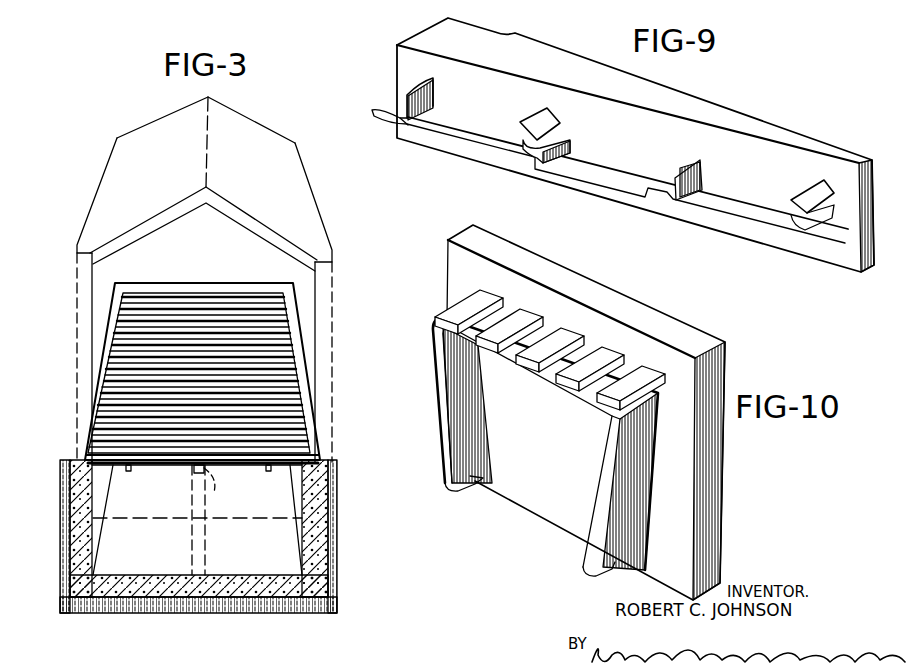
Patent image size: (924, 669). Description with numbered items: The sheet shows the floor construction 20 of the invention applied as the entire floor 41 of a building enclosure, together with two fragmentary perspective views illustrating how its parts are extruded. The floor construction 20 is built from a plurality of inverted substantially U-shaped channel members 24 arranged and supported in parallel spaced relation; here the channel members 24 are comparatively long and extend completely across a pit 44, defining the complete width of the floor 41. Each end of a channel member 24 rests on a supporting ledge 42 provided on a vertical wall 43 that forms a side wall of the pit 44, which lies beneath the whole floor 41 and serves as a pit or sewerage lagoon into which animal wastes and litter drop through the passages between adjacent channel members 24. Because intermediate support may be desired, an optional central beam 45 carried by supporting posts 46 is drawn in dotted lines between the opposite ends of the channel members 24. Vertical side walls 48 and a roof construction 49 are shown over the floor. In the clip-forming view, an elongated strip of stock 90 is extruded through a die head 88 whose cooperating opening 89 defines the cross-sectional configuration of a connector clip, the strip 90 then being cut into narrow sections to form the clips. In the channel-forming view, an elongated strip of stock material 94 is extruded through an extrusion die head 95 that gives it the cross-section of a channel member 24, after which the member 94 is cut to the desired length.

In FIG. 3, the floor construction 20 is at (202, 351).
In FIG. 3, the channel members 24 is at (230, 342).
In FIG. 3, the floor 41 is at (202, 312).
In FIG. 3, the supporting ledge 42 is at (100, 466).
In FIG. 3, the vertical wall 43 is at (75, 527).
In FIG. 3, the pit 44 is at (270, 556).
In FIG. 3, the central beam 45 is at (200, 472).
In FIG. 3, the supporting posts 46 is at (173, 566).
In FIG. 3, the vertical side walls 48 is at (76, 287).
In FIG. 3, the roof construction 49 is at (115, 186).
In FIG. 9, the die head 88 is at (712, 98).
In FIG. 9, the opening 89 is at (731, 175).
In FIG. 9, the strip of stock 90 is at (605, 188).
In FIG. 10, the elongated strip of stock material 94 is at (463, 329).
In FIG. 10, the extrusion die head 95 is at (605, 298).